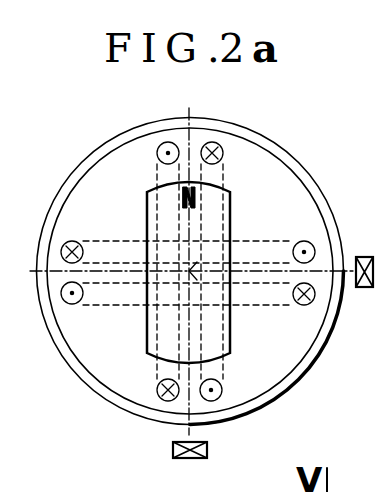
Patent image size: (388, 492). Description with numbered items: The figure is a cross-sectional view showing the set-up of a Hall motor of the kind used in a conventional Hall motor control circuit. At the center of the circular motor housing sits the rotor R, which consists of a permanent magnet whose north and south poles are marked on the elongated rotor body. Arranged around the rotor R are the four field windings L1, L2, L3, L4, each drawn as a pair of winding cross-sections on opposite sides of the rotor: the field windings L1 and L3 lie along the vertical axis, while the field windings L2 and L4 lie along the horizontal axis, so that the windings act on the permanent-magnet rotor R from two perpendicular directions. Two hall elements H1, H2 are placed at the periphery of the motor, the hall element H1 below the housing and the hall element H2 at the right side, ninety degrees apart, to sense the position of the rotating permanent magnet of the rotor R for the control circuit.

The rotor R is at (229, 337).
The field winding L1 is at (159, 400).
The field winding L2 is at (309, 243).
The field winding L3 is at (218, 396).
The field winding L4 is at (310, 301).
The hall element H1 is at (173, 450).
The hall element H2 is at (364, 257).